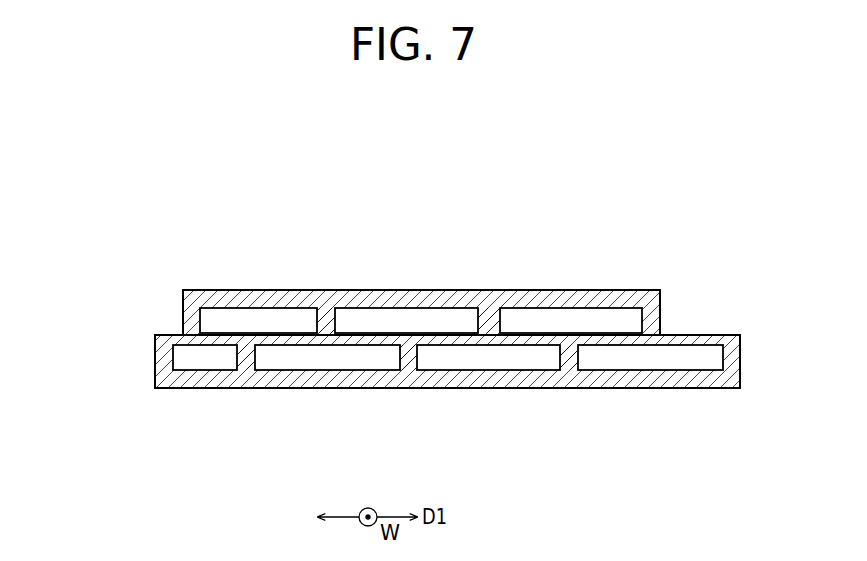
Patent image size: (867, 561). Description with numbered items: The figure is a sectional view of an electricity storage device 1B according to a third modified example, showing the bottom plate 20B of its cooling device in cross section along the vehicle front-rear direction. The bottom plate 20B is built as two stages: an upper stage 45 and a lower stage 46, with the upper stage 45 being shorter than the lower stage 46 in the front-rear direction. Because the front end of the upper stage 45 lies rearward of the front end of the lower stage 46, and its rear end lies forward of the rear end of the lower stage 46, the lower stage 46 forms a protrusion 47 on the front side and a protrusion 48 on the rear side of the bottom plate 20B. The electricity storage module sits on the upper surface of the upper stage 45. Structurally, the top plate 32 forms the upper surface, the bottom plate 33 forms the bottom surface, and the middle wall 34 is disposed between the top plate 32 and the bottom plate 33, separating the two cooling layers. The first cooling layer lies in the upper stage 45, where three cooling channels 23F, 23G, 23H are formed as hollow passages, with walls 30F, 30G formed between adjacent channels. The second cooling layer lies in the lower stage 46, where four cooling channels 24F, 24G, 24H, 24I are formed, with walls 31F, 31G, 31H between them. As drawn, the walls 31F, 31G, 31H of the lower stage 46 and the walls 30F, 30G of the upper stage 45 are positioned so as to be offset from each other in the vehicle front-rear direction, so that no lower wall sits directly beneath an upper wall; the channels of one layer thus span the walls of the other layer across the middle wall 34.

The electricity storage device 1B is at (519, 191).
The bottom plate 20B is at (326, 206).
The top plate 32 is at (614, 298).
The bottom plate 33 is at (302, 377).
The middle wall 34 is at (543, 338).
The upper stage 45 is at (190, 310).
The lower stage 46 is at (158, 362).
The protrusion 47 is at (744, 403).
The protrusion 48 is at (144, 406).
The cooling channel 23H is at (218, 317).
The cooling channel 23G is at (426, 317).
The cooling channel 23F is at (575, 317).
The cooling channel 24I is at (200, 363).
The cooling channel 24H is at (340, 362).
The cooling channel 24G is at (455, 362).
The cooling channel 24F is at (651, 362).
The wall 30G is at (324, 318).
The wall 30F is at (491, 317).
The wall 31H is at (247, 362).
The wall 31G is at (408, 362).
The wall 31F is at (570, 362).